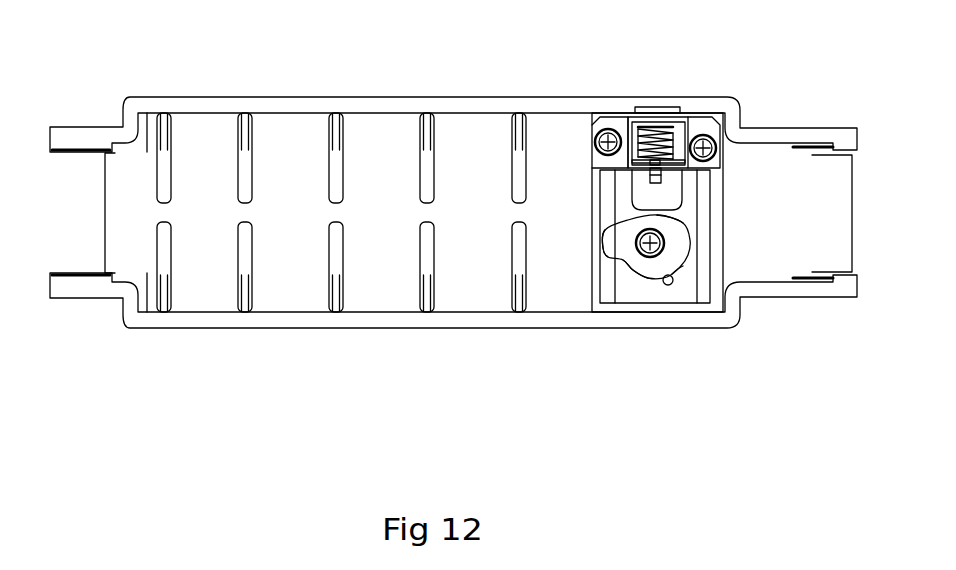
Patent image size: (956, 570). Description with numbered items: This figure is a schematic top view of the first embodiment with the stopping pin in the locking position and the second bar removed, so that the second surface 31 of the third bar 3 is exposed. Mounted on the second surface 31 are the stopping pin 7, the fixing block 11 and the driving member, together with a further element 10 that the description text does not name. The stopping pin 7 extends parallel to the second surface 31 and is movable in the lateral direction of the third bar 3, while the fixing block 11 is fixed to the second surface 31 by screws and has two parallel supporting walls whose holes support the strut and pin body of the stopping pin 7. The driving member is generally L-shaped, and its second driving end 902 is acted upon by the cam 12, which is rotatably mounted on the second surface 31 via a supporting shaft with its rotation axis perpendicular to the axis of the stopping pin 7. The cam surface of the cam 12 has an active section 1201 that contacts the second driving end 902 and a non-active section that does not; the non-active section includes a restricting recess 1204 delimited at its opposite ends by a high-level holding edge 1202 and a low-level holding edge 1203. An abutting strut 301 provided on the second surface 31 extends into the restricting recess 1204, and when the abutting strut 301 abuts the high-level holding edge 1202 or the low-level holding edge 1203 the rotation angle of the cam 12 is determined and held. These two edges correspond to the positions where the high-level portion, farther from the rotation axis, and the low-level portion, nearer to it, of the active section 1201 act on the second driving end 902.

The third bar 3 is at (272, 322).
The second surface 31 is at (392, 135).
The second driving end 902 is at (648, 193).
The spring seat 10 is at (641, 128).
The stopping pin 7 is at (657, 128).
The fixing block 11 is at (693, 128).
The cam 12 is at (680, 248).
The active section 1201 is at (682, 225).
The high-level holding edge 1202 is at (607, 262).
The low-level holding edge 1203 is at (672, 275).
The restricting recess 1204 is at (635, 280).
The abutting strut 301 is at (670, 286).